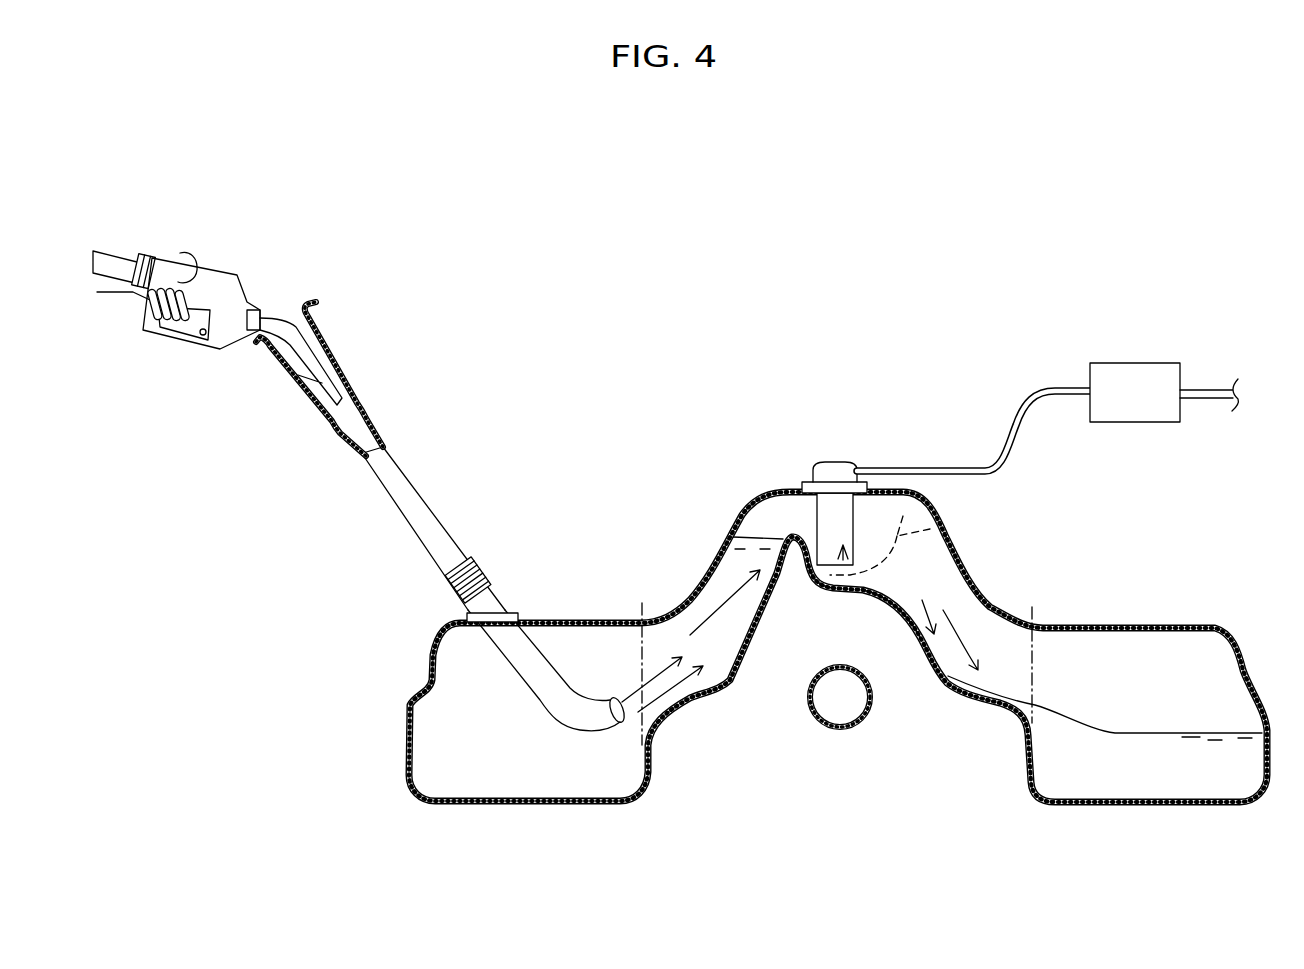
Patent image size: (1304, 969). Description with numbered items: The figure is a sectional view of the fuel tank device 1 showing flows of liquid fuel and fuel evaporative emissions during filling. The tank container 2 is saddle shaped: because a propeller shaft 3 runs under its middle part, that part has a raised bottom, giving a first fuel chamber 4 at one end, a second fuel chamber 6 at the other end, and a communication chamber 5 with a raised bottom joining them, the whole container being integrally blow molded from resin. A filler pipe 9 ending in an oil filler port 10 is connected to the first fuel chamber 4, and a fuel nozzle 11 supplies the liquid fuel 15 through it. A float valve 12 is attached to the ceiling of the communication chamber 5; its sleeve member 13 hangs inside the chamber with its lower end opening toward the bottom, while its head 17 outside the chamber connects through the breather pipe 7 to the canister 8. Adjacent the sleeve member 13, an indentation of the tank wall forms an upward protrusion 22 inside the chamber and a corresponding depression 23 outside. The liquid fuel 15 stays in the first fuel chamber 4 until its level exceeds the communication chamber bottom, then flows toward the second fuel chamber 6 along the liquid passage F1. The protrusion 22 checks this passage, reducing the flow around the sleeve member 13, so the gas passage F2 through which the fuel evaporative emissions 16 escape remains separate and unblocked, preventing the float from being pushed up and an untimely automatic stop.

The fuel tank device 1 is at (572, 373).
The tank container 2 is at (594, 622).
The propeller shaft 3 is at (810, 702).
The first fuel chamber 4 is at (512, 812).
The communication chamber 5 is at (940, 682).
The second fuel chamber 6 is at (1210, 806).
The breather pipe 7 is at (933, 470).
The canister 8 is at (1142, 375).
The filler pipe 9 is at (408, 500).
The oil filler port 10 is at (317, 400).
The fuel nozzle 11 is at (215, 280).
The float valve 12 is at (817, 441).
The sleeve member 13 is at (825, 520).
The liquid fuel 15 is at (572, 765).
The fuel evaporative emissions 16 is at (1148, 697).
The head 17 is at (855, 460).
The protrusion 22 is at (735, 536).
The depression 23 is at (790, 567).
The liquid passage F1 is at (658, 665).
The gas passage F2 is at (952, 514).